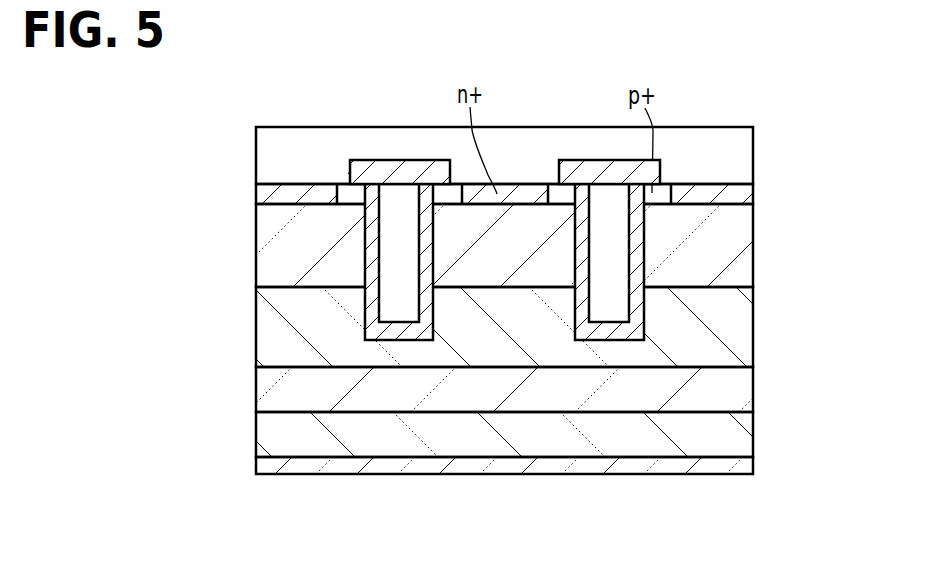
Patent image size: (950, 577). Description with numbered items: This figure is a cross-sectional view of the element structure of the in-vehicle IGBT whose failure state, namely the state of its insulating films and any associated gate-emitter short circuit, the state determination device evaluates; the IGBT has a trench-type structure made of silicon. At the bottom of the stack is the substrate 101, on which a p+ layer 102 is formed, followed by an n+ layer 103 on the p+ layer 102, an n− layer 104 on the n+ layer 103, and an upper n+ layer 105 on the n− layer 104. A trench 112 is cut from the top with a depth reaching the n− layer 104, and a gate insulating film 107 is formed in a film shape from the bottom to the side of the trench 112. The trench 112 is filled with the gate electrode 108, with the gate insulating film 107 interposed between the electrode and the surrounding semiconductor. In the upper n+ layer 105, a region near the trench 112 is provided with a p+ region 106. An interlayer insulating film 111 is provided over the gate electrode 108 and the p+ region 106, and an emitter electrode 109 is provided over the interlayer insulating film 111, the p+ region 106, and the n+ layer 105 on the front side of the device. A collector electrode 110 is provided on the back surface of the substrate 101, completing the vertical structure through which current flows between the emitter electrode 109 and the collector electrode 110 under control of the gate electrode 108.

The substrate 101 is at (730, 440).
The p+ layer 102 is at (730, 390).
The n+ layer 103 is at (730, 330).
The n− layer 104 is at (730, 240).
The n+ layer 105 is at (723, 195).
The p+ region 106 is at (666, 183).
The gate insulating film 107 is at (365, 231).
The gate electrode 108 is at (395, 207).
The emitter electrode 109 is at (527, 153).
The collector electrode 110 is at (525, 468).
The interlayer insulating film 111 is at (348, 173).
The trench 112 is at (397, 260).